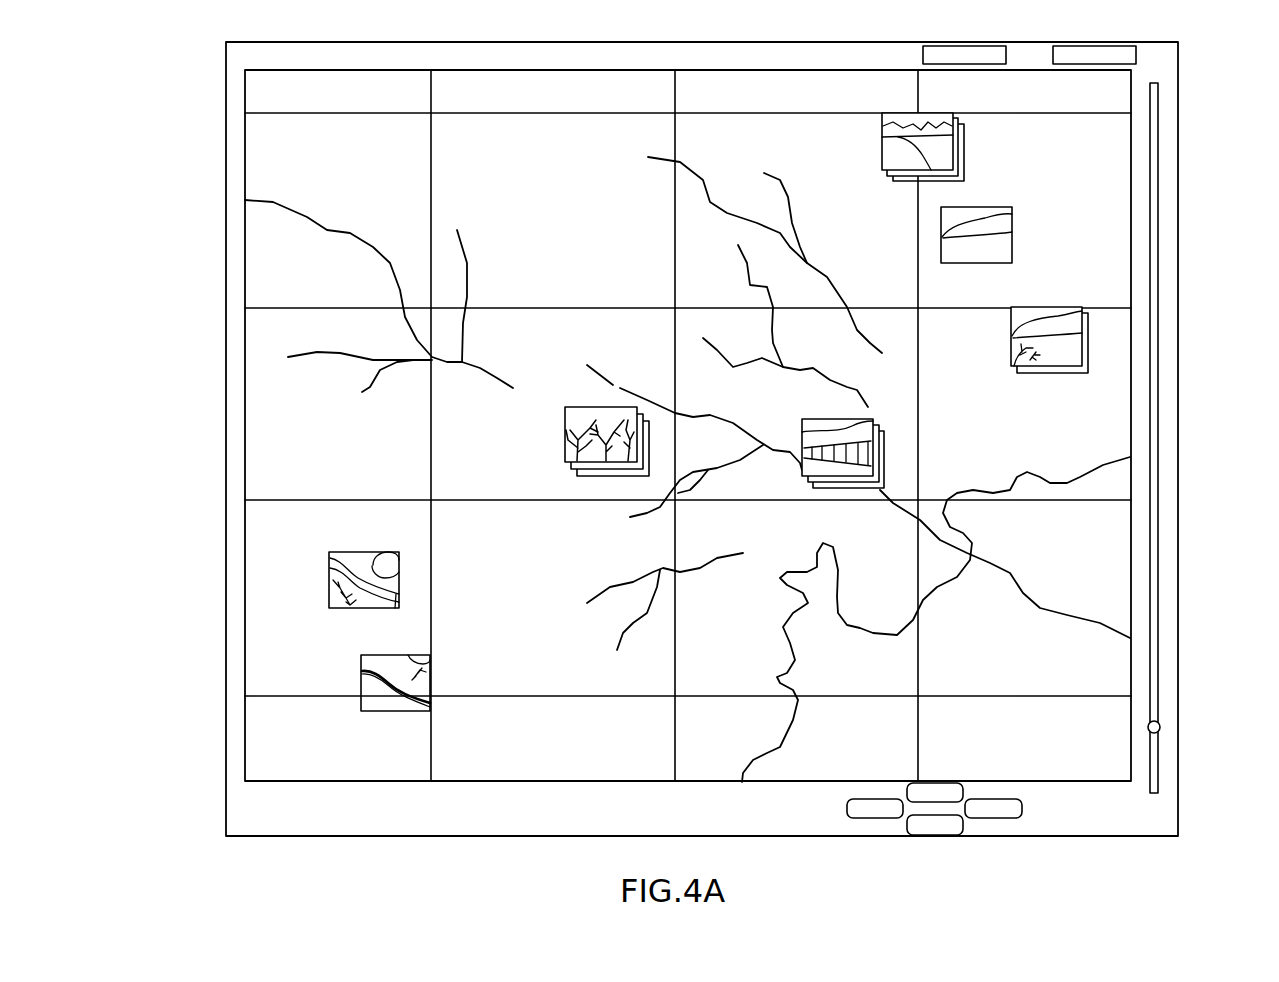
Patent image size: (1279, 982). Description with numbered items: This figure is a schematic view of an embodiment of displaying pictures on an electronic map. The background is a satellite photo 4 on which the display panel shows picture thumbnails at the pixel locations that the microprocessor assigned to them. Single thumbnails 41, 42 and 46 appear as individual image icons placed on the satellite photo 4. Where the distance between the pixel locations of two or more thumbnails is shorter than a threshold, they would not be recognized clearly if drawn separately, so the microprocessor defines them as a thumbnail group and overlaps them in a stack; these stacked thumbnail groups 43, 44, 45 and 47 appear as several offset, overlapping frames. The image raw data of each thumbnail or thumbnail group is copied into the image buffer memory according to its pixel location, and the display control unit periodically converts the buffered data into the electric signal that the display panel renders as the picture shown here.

The satellite photo 4 is at (319, 178).
The thumbnail 41 is at (361, 683).
The thumbnail 42 is at (329, 583).
The thumbnail group 43 is at (565, 459).
The thumbnail group 44 is at (886, 450).
The thumbnail group 45 is at (1088, 349).
The thumbnail 46 is at (1012, 244).
The thumbnail group 47 is at (964, 156).